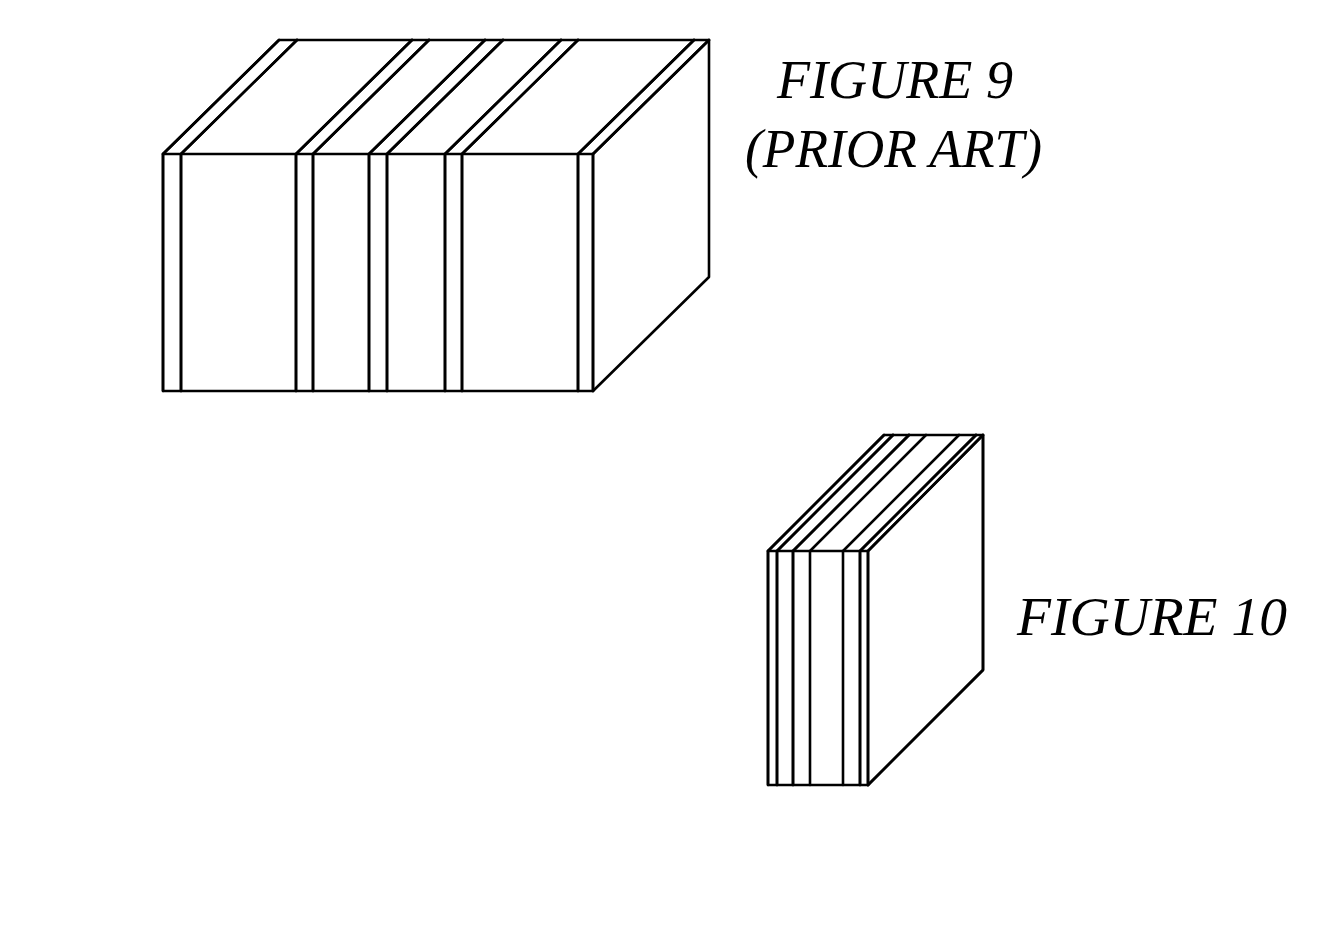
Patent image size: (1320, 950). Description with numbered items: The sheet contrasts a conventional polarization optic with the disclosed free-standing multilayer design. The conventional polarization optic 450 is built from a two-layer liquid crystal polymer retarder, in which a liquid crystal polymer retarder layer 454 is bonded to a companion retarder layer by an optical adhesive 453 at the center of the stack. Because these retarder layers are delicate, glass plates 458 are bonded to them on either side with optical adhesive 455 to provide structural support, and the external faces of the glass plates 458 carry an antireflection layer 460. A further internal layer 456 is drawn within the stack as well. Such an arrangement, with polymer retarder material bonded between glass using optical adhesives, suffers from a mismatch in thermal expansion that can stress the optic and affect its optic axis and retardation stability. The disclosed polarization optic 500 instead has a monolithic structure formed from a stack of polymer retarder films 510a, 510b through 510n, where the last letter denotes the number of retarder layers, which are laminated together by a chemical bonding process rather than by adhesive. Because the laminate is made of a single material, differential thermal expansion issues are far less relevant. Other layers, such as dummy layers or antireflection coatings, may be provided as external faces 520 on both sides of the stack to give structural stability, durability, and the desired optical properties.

In FIG. 9, the conventional polarization optic 450 is at (760, 233).
In FIG. 9, the optical adhesive 453 is at (377, 391).
In FIG. 9, the liquid crystal polymer retarder layer 454 is at (338, 391).
In FIG. 9, the optical adhesive 455 is at (303, 391).
In FIG. 9, the electrode layer 456 is at (415, 391).
In FIG. 9, the glass plate 458 is at (437, 215).
In FIG. 9, the antireflection layer 460 is at (170, 391).
In FIG. 10, the polarization optic 500 is at (727, 633).
In FIG. 10, the polymer retarder film 510a is at (777, 787).
In FIG. 10, the polymer retarder film 510b is at (802, 787).
In FIG. 10, the polymer retarder film 510n is at (850, 787).
In FIG. 10, the external face 520 is at (767, 763).